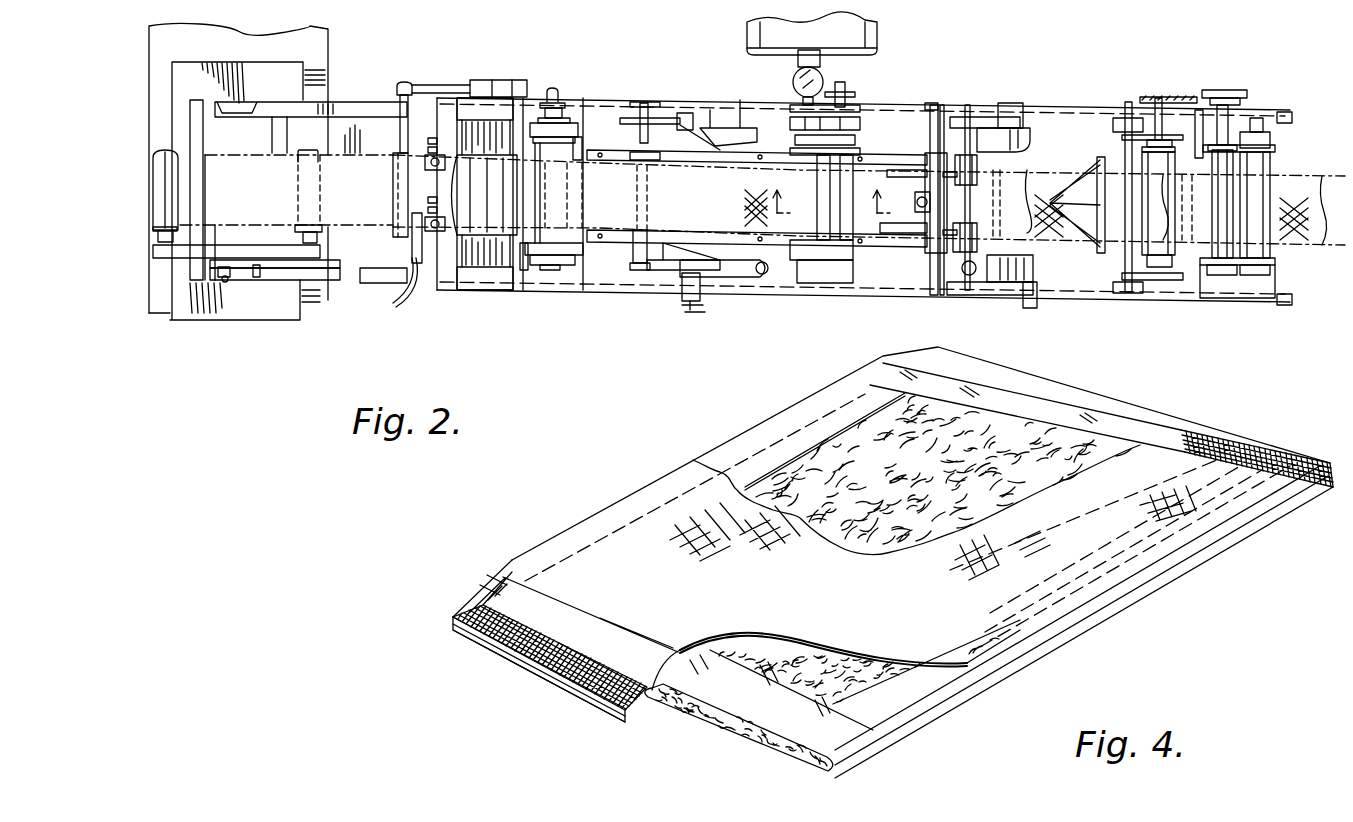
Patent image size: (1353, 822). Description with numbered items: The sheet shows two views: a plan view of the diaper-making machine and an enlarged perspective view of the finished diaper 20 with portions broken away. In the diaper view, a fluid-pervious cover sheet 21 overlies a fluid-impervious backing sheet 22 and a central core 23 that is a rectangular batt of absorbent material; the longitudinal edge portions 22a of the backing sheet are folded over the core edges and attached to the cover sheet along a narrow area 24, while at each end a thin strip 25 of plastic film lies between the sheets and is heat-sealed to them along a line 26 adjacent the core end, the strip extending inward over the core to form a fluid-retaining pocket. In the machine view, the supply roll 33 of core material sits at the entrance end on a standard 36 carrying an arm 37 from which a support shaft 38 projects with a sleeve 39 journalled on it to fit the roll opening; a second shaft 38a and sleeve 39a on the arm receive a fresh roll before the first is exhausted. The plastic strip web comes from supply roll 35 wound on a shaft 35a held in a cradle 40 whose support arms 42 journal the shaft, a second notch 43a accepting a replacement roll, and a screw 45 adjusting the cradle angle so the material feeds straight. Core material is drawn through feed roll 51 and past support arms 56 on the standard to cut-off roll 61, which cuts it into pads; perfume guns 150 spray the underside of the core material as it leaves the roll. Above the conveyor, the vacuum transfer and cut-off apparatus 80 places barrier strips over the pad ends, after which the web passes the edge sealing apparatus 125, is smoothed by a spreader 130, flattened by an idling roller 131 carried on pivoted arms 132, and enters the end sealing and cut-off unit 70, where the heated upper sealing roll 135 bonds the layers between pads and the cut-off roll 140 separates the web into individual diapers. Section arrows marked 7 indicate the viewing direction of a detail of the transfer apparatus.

In FIG. 4, the diaper 20 is at (634, 487).
In FIG. 4, the cover sheet 21 is at (565, 545).
In FIG. 4, the backing sheet 22 is at (678, 708).
In FIG. 4, the longitudinal edge portions 22a is at (725, 460).
In FIG. 4, the core 23 is at (852, 432).
In FIG. 4, the narrow area 24 is at (665, 490).
In FIG. 4, the thin strip of plastic film 25 is at (1090, 412).
In FIG. 4, the heat-seal line 26 is at (525, 663).
In FIG. 2, the supply roll of core material 33 is at (382, 222).
In FIG. 2, the supply roll 35 is at (738, 196).
In FIG. 2, the shaft 35a is at (642, 190).
In FIG. 2, the standard 36 is at (252, 278).
In FIG. 2, the arm 37 is at (176, 253).
In FIG. 2, the support shaft 38 is at (310, 243).
In FIG. 2, the second shaft 38a is at (158, 233).
In FIG. 2, the sleeve 39 is at (300, 188).
In FIG. 2, the sleeve 39a is at (160, 178).
In FIG. 2, the cradle assembly 40 is at (676, 309).
In FIG. 2, the support arms 42 is at (715, 112).
In FIG. 2, the second notch 43a is at (758, 122).
In FIG. 2, the screw 45 is at (760, 278).
In FIG. 2, the feed roll 51 is at (492, 226).
In FIG. 2, the support arms 56 is at (770, 22).
In FIG. 2, the cut-off roll 61 is at (530, 153).
In FIG. 2, the section line 7- 7 is at (831, 214).
In FIG. 2, the end sealing and cut-off unit 70 is at (1256, 125).
In FIG. 2, the vacuum transfer and cut-off apparatus 80 is at (858, 147).
In FIG. 2, the edge sealing apparatus 125 is at (912, 252).
In FIG. 2, the spreader 130 is at (1086, 244).
In FIG. 2, the idling roller 131 is at (1165, 268).
In FIG. 2, the arms 132 is at (1150, 287).
In FIG. 2, the upper sealing roll 135 is at (1233, 270).
In FIG. 2, the cut-off roll 140 is at (1266, 248).
In FIG. 2, the perfume guns 150 is at (432, 170).